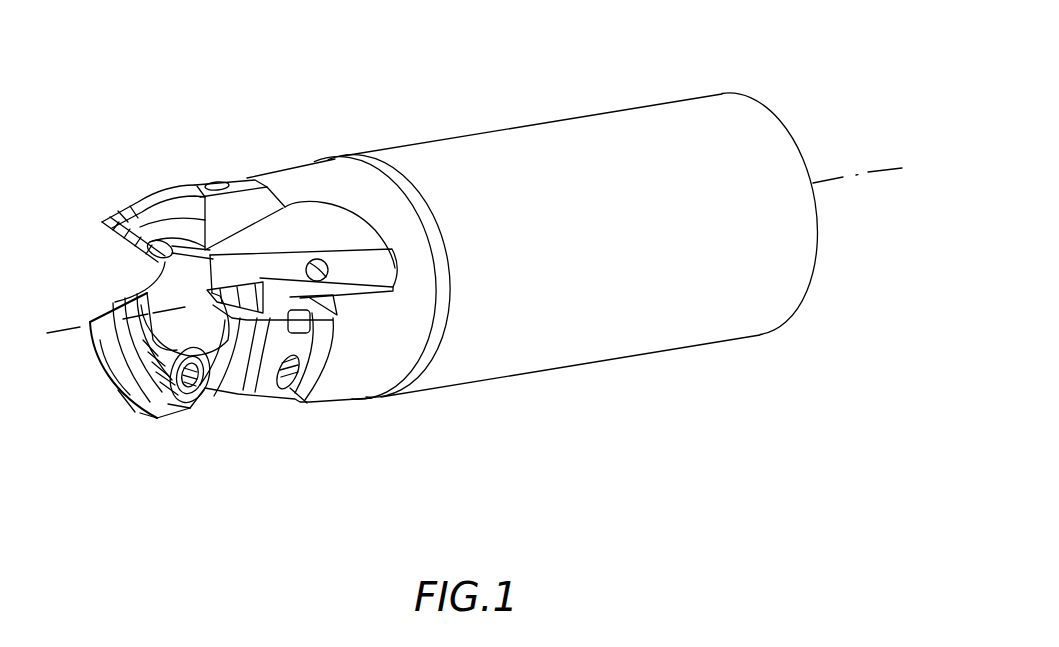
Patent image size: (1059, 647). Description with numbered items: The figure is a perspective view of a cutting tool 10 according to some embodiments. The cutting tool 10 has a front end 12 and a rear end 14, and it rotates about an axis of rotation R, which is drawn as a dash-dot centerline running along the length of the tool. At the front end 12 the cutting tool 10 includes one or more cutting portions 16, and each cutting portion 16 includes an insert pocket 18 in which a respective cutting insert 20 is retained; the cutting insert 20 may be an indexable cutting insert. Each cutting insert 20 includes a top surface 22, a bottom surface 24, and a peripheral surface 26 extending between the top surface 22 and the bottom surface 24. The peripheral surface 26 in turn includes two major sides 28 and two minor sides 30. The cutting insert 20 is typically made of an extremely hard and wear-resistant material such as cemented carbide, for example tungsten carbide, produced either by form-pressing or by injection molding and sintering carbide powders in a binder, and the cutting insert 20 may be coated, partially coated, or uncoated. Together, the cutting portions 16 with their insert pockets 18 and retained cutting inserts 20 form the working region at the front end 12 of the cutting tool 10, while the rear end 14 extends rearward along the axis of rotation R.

The cutting tool 10 is at (464, 261).
The front end 12 is at (221, 304).
The rear end 14 is at (713, 88).
The cutting portion 16 is at (168, 432).
The insert pocket 18 is at (116, 372).
The cutting insert 20 is at (152, 422).
The top surface 22 is at (208, 384).
The bottom surface 24 is at (130, 298).
The peripheral surface 26 is at (133, 418).
The major side 28 is at (177, 408).
The minor side 30 is at (148, 404).
The axis of rotation R is at (464, 258).